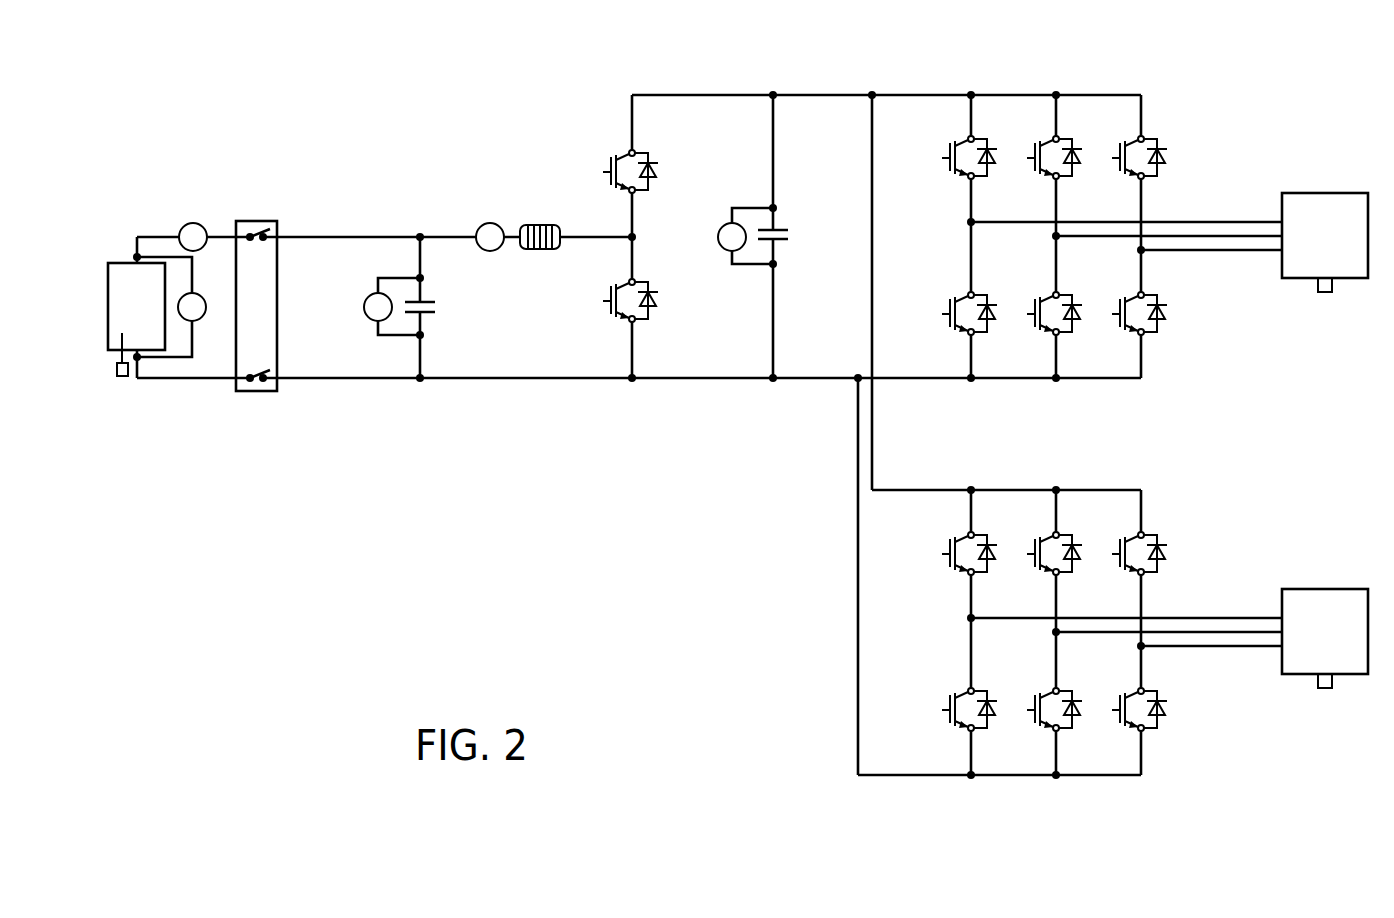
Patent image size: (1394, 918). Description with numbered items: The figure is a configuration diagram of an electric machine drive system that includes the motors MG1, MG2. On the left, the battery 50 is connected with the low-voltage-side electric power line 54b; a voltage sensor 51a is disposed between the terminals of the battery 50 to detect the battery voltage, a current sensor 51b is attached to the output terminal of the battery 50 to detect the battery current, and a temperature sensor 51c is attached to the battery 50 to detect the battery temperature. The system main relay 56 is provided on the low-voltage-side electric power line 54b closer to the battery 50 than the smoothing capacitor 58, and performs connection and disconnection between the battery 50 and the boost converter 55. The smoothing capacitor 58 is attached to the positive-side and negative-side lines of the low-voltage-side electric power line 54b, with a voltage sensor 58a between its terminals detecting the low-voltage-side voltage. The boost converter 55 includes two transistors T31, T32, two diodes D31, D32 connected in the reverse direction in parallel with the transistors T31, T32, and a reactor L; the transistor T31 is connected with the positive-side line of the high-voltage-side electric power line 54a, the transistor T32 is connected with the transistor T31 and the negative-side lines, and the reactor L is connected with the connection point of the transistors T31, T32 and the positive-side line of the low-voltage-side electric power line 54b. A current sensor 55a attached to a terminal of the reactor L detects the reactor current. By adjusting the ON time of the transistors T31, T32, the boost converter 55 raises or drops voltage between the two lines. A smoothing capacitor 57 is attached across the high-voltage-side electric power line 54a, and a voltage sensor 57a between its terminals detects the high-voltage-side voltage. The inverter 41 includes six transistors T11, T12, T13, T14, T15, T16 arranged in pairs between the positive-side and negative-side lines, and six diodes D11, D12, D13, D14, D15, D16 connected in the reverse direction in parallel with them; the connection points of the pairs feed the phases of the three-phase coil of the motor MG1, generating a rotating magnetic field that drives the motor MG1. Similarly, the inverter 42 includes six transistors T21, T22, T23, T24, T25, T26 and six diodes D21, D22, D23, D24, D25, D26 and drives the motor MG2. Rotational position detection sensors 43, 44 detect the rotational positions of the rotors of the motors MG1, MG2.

The battery 50 is at (123, 260).
The voltage sensor 51a is at (198, 323).
The current sensor 51b is at (193, 222).
The temperature sensor 51c is at (122, 379).
The system main relay 56 is at (256, 221).
The low-voltage-side electric power line 54b is at (320, 240).
The smoothing capacitor 58 is at (428, 298).
The voltage sensor 58a is at (375, 293).
The current sensor 55a is at (490, 222).
The reactor L is at (538, 222).
The boost converter 55 is at (629, 204).
The transistor T31 is at (611, 159).
The transistor T32 is at (611, 288).
The diode D31 is at (654, 179).
The diode D32 is at (654, 308).
The smoothing capacitor 57 is at (782, 222).
The voltage sensor 57a is at (725, 222).
The high-voltage-side electric power line 54a is at (844, 97).
The inverter 41 is at (1033, 204).
The inverter 42 is at (1026, 601).
The transistor T11 is at (950, 145).
The transistor T12 is at (1035, 145).
The transistor T13 is at (1120, 145).
The transistor T14 is at (950, 301).
The transistor T15 is at (1035, 301).
The transistor T16 is at (1120, 301).
The diode D11 is at (993, 165).
The diode D12 is at (1078, 165).
The diode D13 is at (1163, 165).
The diode D14 is at (993, 321).
The diode D15 is at (1078, 321).
The diode D16 is at (1163, 321).
The transistor T21 is at (950, 541).
The transistor T22 is at (1035, 541).
The transistor T23 is at (1120, 541).
The transistor T24 is at (950, 697).
The transistor T25 is at (1035, 697).
The transistor T26 is at (1120, 697).
The diode D21 is at (993, 561).
The diode D22 is at (1078, 561).
The diode D23 is at (1163, 561).
The diode D24 is at (993, 717).
The diode D25 is at (1078, 717).
The diode D26 is at (1163, 717).
The motor MG1 is at (1325, 193).
The motor MG2 is at (1325, 589).
The rotational position detection sensor 43 is at (1325, 293).
The rotational position detection sensor 44 is at (1325, 689).